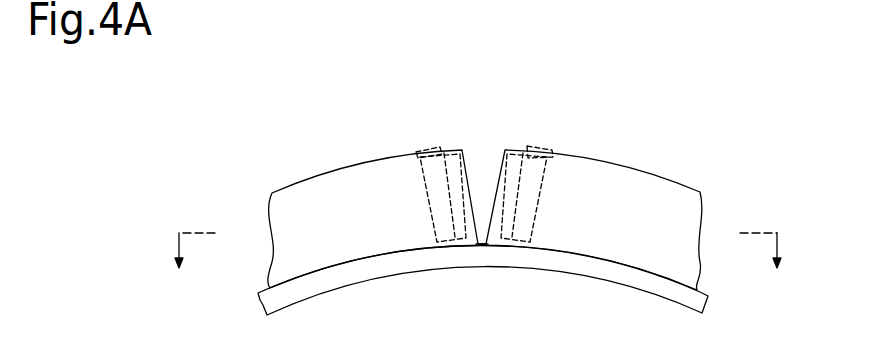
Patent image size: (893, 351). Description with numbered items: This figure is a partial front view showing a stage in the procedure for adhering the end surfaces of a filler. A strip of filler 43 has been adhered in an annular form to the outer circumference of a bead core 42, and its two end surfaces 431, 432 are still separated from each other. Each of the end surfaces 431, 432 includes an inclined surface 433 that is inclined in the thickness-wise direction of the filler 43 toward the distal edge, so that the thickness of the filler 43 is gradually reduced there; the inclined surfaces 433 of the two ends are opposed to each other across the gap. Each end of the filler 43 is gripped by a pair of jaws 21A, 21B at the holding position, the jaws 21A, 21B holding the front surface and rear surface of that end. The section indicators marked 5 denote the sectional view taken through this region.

The bead core 42 is at (357, 277).
The filler 43 is at (672, 191).
The end surface 431 is at (455, 190).
The end surface 432 is at (513, 195).
The inclined surface 433 is at (480, 246).
The jaw 21A is at (433, 147).
The jaw 21B is at (520, 154).
The section line V-V 5 is at (478, 267).